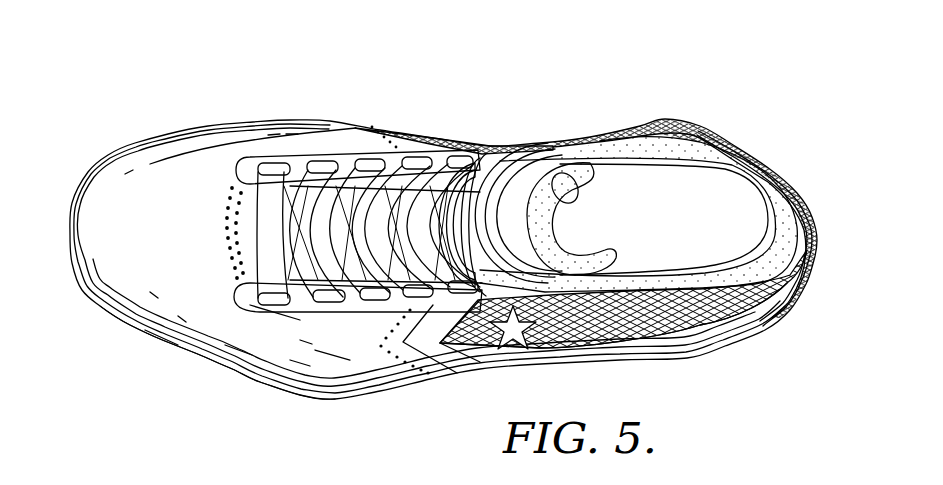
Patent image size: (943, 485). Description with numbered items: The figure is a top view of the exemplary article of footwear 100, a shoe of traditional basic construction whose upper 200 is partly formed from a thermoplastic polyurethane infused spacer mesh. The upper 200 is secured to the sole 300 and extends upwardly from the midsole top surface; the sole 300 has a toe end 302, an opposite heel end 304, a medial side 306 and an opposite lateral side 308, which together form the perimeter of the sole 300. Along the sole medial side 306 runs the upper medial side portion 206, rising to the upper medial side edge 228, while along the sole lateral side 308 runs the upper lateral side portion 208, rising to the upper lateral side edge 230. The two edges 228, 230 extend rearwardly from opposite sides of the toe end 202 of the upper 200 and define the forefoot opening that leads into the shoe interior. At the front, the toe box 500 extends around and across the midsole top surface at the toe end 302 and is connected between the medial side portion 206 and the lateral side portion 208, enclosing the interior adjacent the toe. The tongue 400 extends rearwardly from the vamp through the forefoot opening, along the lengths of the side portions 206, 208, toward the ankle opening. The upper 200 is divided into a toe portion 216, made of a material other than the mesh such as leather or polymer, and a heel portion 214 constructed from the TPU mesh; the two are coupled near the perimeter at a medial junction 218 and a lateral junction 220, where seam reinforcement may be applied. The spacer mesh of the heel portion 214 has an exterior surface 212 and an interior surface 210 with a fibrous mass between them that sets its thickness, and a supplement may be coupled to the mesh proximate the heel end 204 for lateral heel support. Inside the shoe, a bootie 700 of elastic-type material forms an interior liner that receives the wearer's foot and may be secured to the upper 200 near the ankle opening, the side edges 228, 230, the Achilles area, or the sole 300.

The article of footwear 100 is at (343, 60).
The toe box 500 is at (172, 177).
The toe end of the upper 202 is at (424, 255).
The toe end of the sole 302 is at (78, 207).
The upper medial side portion 206 is at (442, 116).
The sole medial side 306 is at (355, 128).
The upper lateral side edge 230 is at (450, 163).
The upper medial side edge 228 is at (420, 263).
The medial junction 218 is at (478, 150).
The tongue 400 is at (540, 187).
The exterior surface 212 is at (693, 118).
The heel end 204 is at (764, 226).
The heel end of the sole 304 is at (818, 212).
The interior surface 210 is at (670, 150).
The bootie 700 is at (766, 220).
The toe portion 216 is at (198, 302).
The sole 300 is at (328, 403).
The upper lateral side portion 208 is at (428, 285).
The sole lateral side 308 is at (380, 381).
The lateral junction 220 is at (448, 360).
The upper 200 is at (587, 350).
The heel portion 214 is at (627, 357).